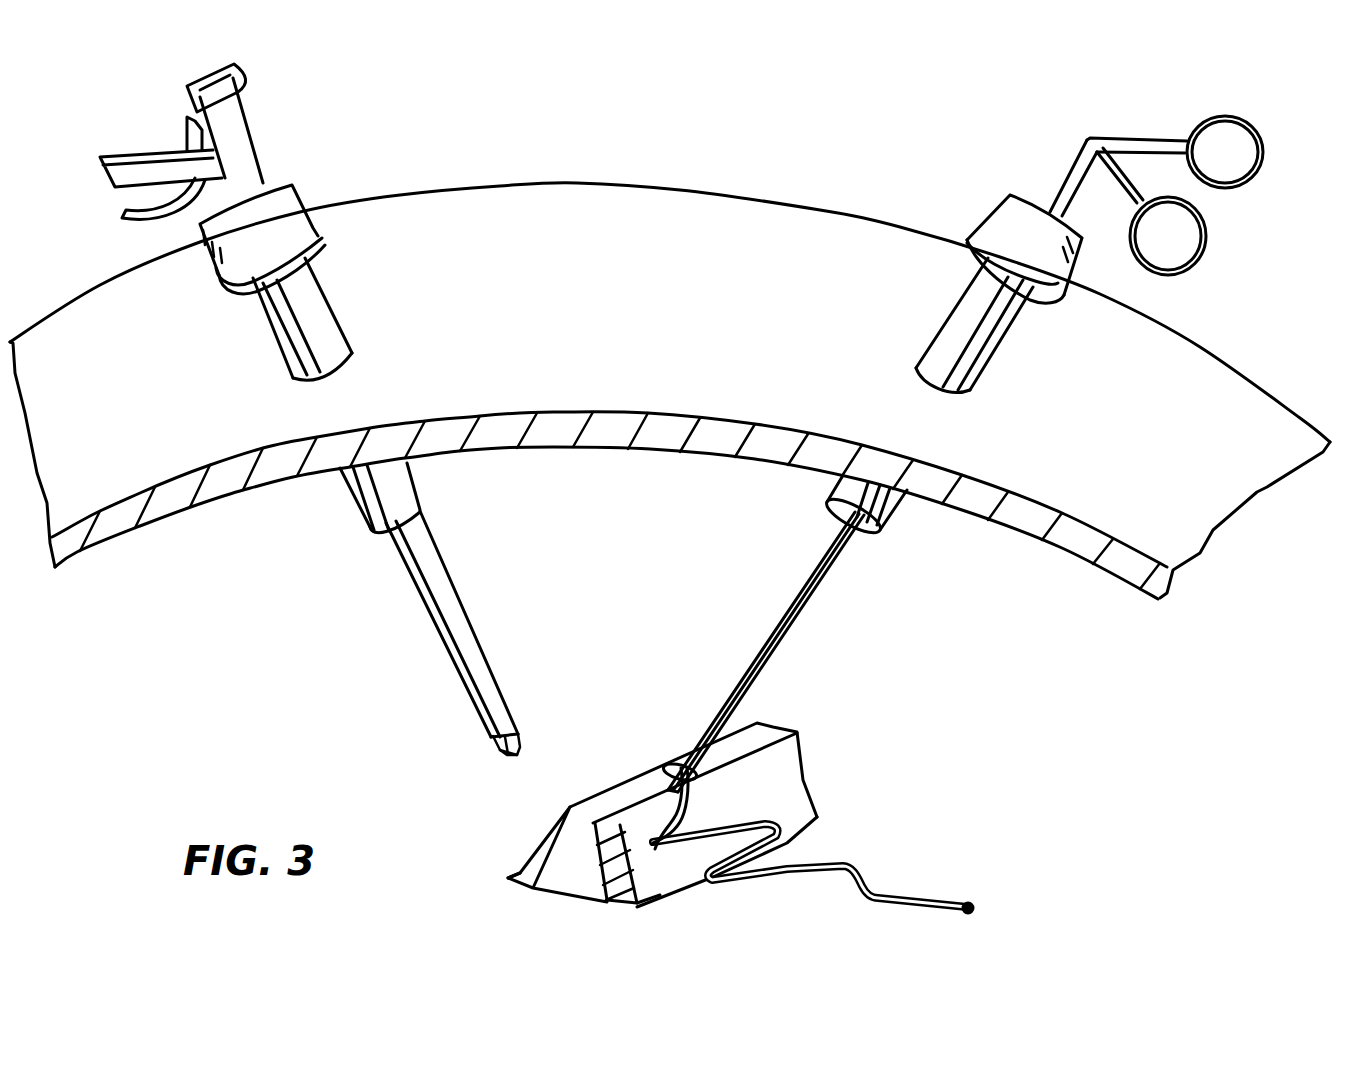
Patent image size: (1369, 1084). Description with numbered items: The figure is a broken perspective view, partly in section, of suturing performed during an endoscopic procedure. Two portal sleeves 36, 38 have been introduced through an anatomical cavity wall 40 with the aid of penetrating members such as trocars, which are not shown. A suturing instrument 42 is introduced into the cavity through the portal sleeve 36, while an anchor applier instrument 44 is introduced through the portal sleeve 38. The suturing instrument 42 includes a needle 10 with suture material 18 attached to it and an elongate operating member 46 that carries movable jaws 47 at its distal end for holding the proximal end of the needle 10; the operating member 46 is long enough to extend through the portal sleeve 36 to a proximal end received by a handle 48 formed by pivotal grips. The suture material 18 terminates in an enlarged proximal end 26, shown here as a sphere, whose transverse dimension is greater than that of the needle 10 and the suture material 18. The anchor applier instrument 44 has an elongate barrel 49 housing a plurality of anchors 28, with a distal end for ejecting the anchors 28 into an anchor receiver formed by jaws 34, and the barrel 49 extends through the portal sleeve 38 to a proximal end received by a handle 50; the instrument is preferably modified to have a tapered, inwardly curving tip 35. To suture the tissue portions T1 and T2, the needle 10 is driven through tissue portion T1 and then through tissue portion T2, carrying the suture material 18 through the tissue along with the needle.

The needle 10 is at (697, 807).
The suture material 18 is at (833, 817).
The enlarged proximal end 26 is at (977, 903).
The anchors 28 is at (505, 744).
The jaws 34 is at (506, 744).
The tapered, inwardly curving tip 35 is at (508, 752).
The portal sleeve 36 is at (950, 313).
The portal sleeve 38 is at (326, 293).
The anatomical cavity wall 40 is at (622, 205).
The suturing instrument 42 is at (766, 652).
The anchor applier instrument 44 is at (462, 626).
The elongate operating member 46 is at (780, 640).
The movable jaws 47 is at (675, 772).
The handle 48 is at (1170, 140).
The elongate barrel 49 is at (453, 633).
The handle 50 is at (245, 142).
The tissue portion T1 is at (653, 893).
The tissue portion T2 is at (507, 873).